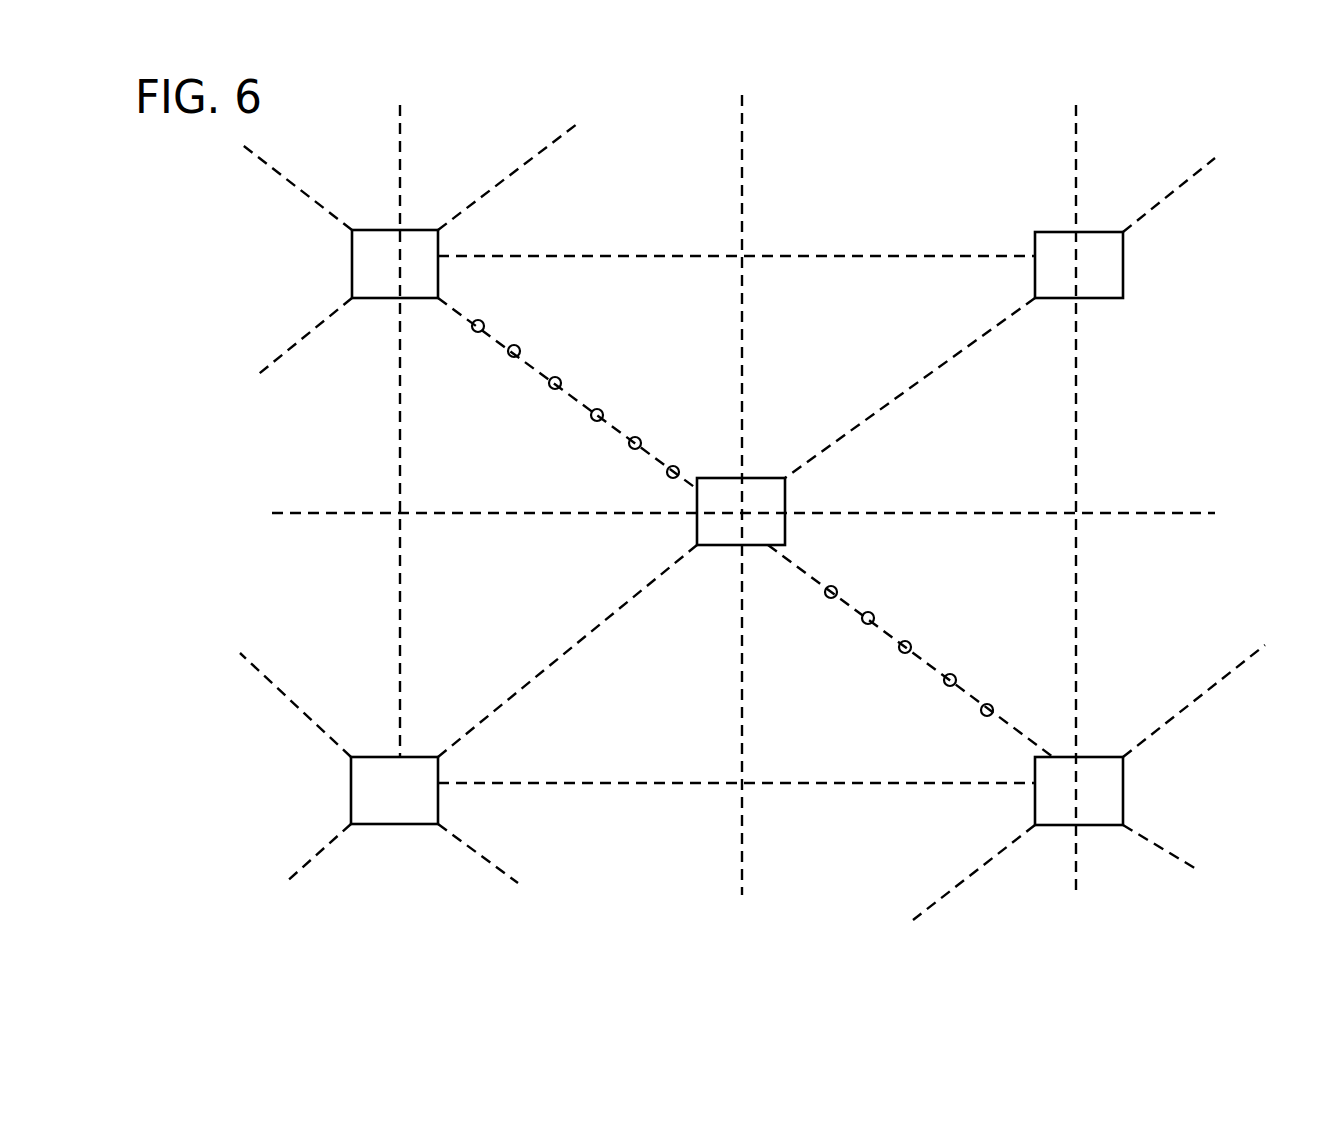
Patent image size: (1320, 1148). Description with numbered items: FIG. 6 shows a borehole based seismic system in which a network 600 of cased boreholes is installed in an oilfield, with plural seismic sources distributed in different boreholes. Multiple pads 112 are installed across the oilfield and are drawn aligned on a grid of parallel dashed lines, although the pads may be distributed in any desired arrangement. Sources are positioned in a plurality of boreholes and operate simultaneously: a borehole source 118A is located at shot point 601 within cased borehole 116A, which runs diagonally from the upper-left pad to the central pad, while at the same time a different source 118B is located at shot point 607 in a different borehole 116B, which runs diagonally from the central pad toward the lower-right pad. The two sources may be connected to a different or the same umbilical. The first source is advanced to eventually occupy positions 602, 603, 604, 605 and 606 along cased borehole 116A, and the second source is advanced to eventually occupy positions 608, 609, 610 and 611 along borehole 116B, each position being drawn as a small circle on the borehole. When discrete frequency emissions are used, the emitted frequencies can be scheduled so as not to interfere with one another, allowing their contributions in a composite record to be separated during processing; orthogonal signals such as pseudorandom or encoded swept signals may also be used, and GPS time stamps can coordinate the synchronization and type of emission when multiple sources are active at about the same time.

The network of cased boreholes 600 is at (677, 154).
The pad 112 is at (412, 281).
The cased borehole 116A is at (450, 303).
The borehole 116B is at (810, 575).
The borehole source 118A is at (475, 320).
The source 118B is at (829, 585).
The shot point 601 is at (481, 319).
The position 602 is at (516, 344).
The position 603 is at (559, 376).
The position 604 is at (600, 408).
The position 605 is at (637, 437).
The position 606 is at (676, 465).
The shot point 607 is at (834, 586).
The position 608 is at (871, 611).
The position 609 is at (909, 640).
The position 610 is at (955, 673).
The position 611 is at (992, 703).